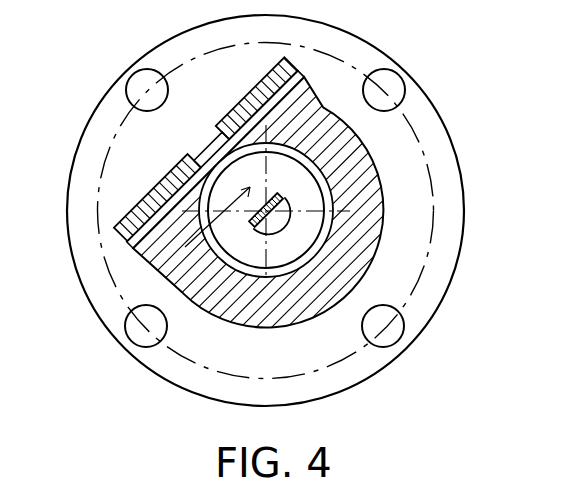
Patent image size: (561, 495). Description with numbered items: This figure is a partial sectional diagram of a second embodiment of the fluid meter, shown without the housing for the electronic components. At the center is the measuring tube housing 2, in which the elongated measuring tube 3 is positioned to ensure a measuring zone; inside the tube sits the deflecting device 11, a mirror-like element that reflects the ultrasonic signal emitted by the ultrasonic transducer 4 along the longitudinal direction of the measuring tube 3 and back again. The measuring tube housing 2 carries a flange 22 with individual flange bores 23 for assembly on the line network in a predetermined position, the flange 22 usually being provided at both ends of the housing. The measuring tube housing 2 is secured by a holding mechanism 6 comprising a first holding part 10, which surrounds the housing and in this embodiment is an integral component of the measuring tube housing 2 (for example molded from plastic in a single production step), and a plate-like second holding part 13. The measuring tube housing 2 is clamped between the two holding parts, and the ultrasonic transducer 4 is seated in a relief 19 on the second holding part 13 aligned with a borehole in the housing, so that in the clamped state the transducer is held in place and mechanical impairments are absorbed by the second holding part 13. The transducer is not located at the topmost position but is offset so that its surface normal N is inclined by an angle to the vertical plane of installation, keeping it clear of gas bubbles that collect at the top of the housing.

The measuring tube housing 2 is at (358, 211).
The measuring tube 3 is at (361, 149).
The ultrasonic transducer 4 is at (210, 151).
The holding mechanism 6 is at (231, 192).
The first holding part 10 is at (342, 263).
The deflecting device 11 is at (276, 231).
The second holding part 13 is at (138, 198).
The relief 19 is at (217, 132).
The flange 22 is at (82, 139).
The flange bores 23 is at (403, 81).
The surface normal N is at (162, 265).